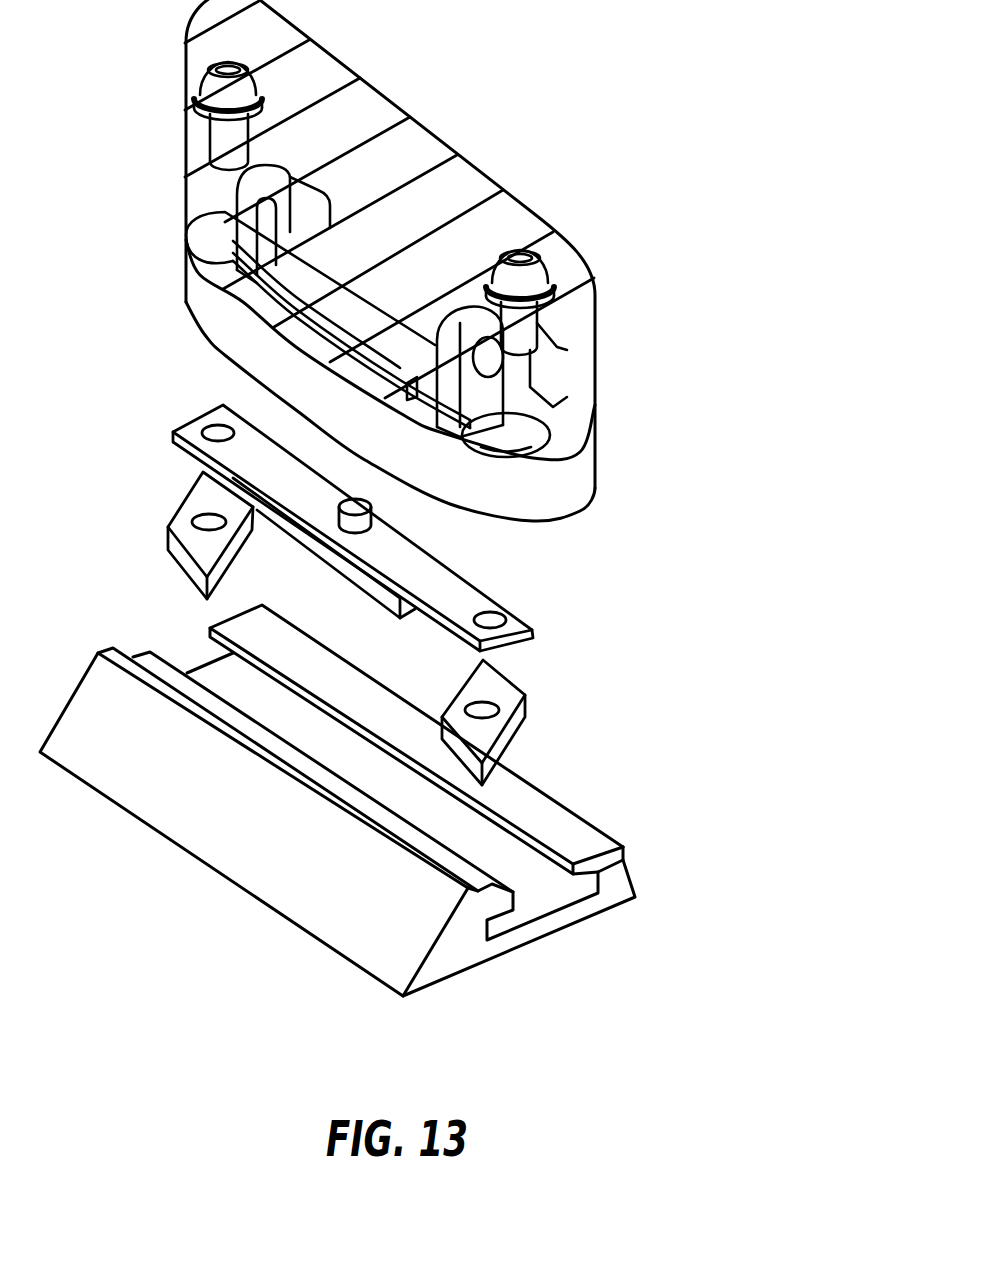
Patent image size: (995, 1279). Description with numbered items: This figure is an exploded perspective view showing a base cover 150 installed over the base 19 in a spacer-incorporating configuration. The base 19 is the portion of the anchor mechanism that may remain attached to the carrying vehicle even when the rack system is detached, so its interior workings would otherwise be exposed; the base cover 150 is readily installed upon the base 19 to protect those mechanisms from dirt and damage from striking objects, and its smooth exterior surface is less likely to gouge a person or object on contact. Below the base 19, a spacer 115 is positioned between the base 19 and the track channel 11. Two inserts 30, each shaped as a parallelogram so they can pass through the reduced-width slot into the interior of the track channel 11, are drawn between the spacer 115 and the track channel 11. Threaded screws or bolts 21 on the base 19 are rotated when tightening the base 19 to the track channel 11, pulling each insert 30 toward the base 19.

The base cover 150 is at (437, 133).
The base 19 is at (620, 474).
The threaded screws or bolts 21 is at (530, 323).
The spacer 115 is at (475, 593).
The insert 30 is at (528, 722).
The track channel 11 is at (570, 952).